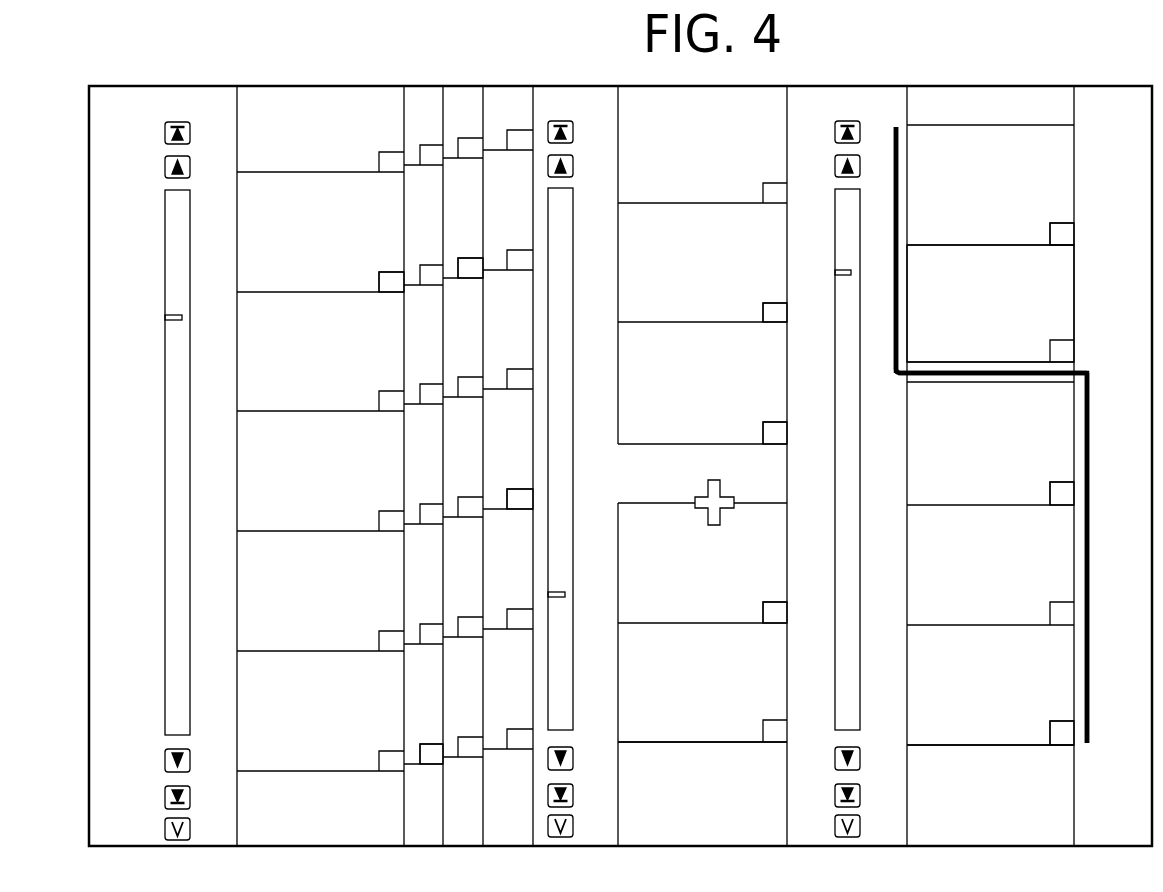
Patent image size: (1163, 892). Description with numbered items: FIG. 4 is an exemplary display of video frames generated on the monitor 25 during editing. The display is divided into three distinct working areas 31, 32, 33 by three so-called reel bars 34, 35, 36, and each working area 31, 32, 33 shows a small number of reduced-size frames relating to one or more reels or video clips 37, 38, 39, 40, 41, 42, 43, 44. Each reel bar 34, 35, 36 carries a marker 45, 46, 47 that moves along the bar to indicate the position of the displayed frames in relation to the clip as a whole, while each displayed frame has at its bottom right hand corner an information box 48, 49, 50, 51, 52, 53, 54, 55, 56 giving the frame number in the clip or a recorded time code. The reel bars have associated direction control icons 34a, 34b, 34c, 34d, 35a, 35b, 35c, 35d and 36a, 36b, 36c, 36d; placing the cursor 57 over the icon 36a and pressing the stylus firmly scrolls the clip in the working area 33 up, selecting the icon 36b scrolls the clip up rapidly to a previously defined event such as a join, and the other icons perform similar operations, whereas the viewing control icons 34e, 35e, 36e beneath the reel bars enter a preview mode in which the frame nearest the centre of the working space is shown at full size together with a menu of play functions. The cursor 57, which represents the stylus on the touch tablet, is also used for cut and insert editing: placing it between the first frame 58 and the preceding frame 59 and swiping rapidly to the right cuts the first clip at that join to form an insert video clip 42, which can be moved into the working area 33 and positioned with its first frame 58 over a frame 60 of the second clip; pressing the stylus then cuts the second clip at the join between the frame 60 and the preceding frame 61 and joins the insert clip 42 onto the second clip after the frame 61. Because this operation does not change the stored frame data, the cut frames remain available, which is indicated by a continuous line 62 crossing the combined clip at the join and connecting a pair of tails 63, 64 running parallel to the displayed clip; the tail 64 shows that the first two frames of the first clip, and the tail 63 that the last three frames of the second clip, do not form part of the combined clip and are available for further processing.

The monitor 25 is at (89, 222).
The working area 31 is at (210, 135).
The working area 32 is at (597, 120).
The working area 33 is at (878, 95).
The reel bar 34 is at (178, 216).
The direction control icon 34a is at (165, 132).
The direction control icon 34b is at (165, 166).
The direction control icon 34c is at (165, 797).
The direction control icon 34d is at (165, 760).
The viewing control icon 34e is at (165, 828).
The reel bar 35 is at (572, 250).
The direction control icon 35a is at (565, 120).
The direction control icon 35b is at (573, 165).
The direction control icon 35c is at (573, 795).
The direction control icon 35d is at (573, 760).
The viewing control icon 35e is at (573, 826).
The reel bar 36 is at (836, 350).
The direction control icon 36a is at (835, 133).
The direction control icon 36b is at (835, 165).
The direction control icon 36c is at (835, 795).
The direction control icon 36d is at (835, 760).
The viewing control icon 36e is at (860, 820).
The video clip 37 is at (403, 788).
The video clip 38 is at (445, 812).
The video clip 39 is at (490, 820).
The video clip 40 is at (532, 802).
The video clip 41 is at (790, 402).
The insert video clip 42 is at (790, 825).
The video clip 43 is at (1076, 308).
The video clip 44 is at (1074, 828).
The marker 45 is at (172, 320).
The marker 46 is at (560, 592).
The marker 47 is at (847, 270).
The information box 48 is at (383, 282).
The information box 49 is at (465, 266).
The information box 50 is at (522, 490).
The information box 51 is at (428, 748).
The information box 52 is at (765, 303).
The information box 53 is at (772, 603).
The information box 54 is at (1052, 230).
The information box 55 is at (1050, 490).
The information box 56 is at (1052, 724).
The cursor 57 is at (702, 485).
The first frame 58 is at (762, 510).
The preceding frame 59 is at (653, 399).
The frame of second video clip 60 is at (922, 453).
The preceding frame 61 is at (1062, 287).
The continuous line 62 is at (1045, 375).
The tail 63 is at (1087, 495).
The tail 64 is at (898, 340).